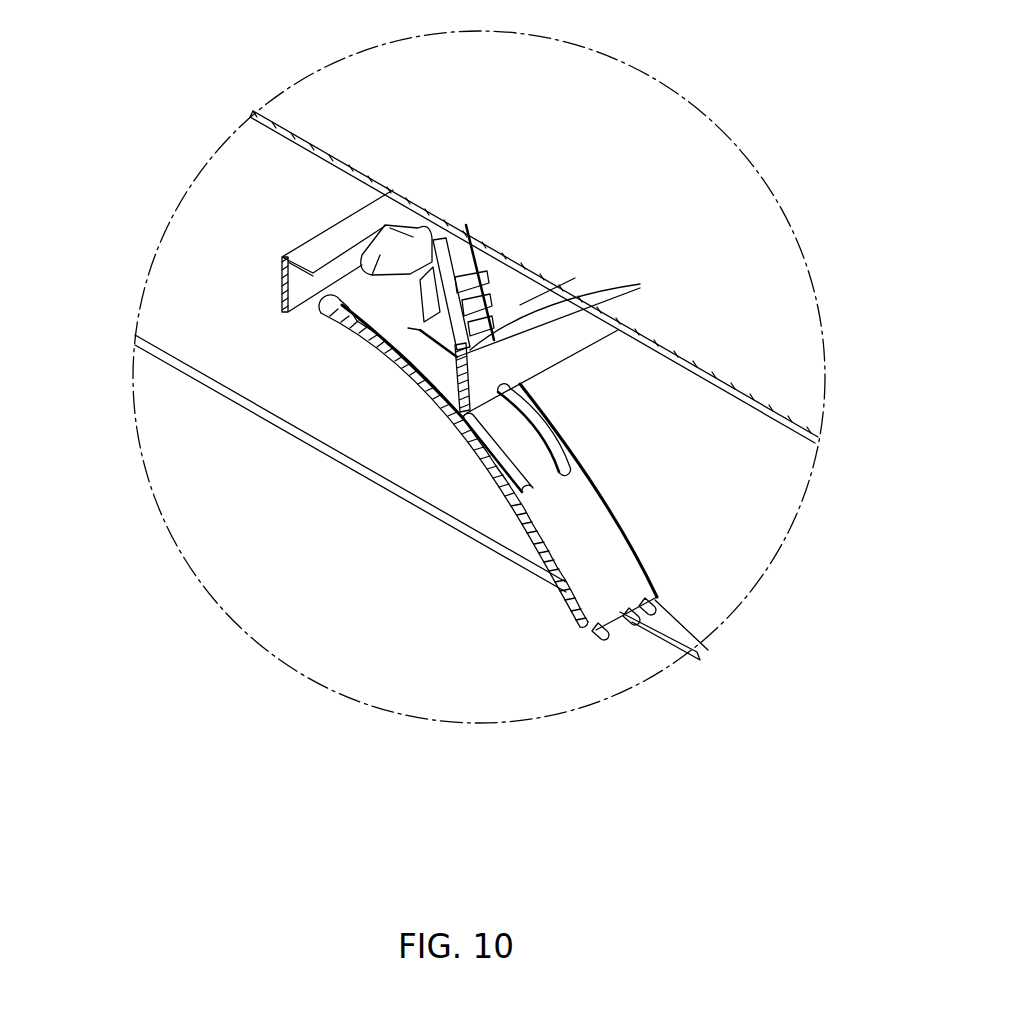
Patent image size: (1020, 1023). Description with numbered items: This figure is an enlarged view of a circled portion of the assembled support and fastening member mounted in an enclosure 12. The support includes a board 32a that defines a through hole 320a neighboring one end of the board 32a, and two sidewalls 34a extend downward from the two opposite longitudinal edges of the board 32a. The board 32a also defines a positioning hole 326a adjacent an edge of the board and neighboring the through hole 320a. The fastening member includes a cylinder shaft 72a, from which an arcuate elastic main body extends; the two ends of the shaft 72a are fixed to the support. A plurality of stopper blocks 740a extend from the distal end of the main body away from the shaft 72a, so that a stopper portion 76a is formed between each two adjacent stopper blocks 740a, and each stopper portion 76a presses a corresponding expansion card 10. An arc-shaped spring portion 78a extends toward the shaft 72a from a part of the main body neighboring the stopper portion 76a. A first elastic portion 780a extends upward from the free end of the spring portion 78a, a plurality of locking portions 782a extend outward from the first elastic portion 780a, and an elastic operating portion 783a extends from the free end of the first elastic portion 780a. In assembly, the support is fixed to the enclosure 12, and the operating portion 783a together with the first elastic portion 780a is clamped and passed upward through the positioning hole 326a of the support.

The expansion card 10 is at (292, 432).
The enclosure 12 is at (767, 404).
The board 32a is at (530, 313).
The sidewall 34a is at (633, 396).
The cylinder shaft 72a is at (325, 305).
The stopper portion 76a is at (690, 649).
The spring portion 78a is at (508, 440).
The through hole 320a is at (325, 278).
The positioning hole 326a is at (555, 296).
The stopper block 740a is at (607, 627).
The first elastic portion 780a is at (425, 325).
The locking portion 782a is at (470, 263).
The operating portion 783a is at (437, 235).